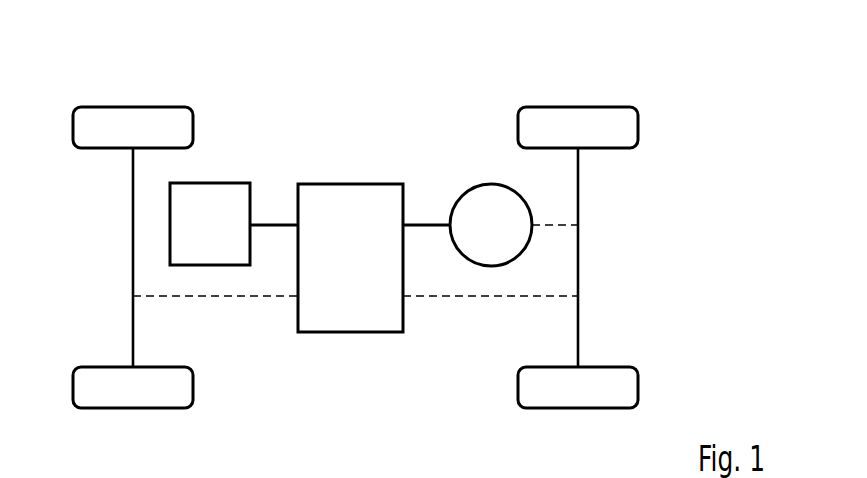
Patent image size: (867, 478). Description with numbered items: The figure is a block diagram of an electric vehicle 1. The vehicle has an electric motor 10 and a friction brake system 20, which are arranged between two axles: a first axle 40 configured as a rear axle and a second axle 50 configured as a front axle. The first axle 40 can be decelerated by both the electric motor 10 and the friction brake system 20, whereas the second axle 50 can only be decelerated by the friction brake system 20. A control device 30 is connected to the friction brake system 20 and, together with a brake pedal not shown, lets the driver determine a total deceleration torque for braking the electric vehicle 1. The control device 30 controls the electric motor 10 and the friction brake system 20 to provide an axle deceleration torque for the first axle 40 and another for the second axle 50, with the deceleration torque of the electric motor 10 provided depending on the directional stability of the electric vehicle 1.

The electric vehicle 1 is at (712, 130).
The electric motor 10 is at (503, 234).
The friction brake system 20 is at (362, 268).
The control device 30 is at (223, 234).
The first axle 40 is at (578, 257).
The second axle 50 is at (133, 257).